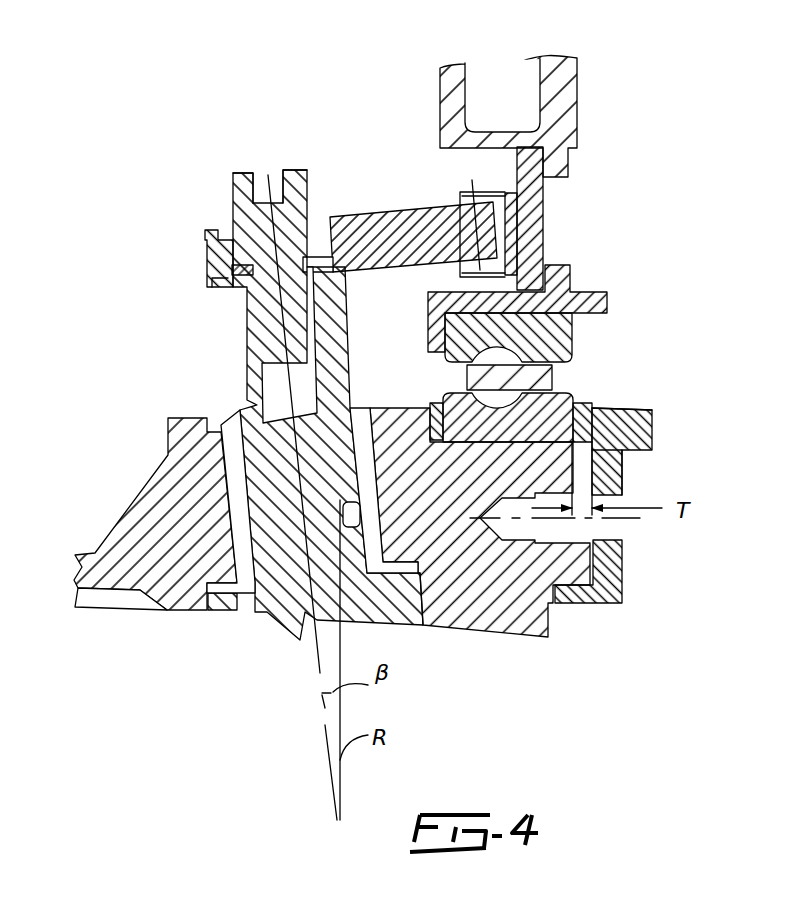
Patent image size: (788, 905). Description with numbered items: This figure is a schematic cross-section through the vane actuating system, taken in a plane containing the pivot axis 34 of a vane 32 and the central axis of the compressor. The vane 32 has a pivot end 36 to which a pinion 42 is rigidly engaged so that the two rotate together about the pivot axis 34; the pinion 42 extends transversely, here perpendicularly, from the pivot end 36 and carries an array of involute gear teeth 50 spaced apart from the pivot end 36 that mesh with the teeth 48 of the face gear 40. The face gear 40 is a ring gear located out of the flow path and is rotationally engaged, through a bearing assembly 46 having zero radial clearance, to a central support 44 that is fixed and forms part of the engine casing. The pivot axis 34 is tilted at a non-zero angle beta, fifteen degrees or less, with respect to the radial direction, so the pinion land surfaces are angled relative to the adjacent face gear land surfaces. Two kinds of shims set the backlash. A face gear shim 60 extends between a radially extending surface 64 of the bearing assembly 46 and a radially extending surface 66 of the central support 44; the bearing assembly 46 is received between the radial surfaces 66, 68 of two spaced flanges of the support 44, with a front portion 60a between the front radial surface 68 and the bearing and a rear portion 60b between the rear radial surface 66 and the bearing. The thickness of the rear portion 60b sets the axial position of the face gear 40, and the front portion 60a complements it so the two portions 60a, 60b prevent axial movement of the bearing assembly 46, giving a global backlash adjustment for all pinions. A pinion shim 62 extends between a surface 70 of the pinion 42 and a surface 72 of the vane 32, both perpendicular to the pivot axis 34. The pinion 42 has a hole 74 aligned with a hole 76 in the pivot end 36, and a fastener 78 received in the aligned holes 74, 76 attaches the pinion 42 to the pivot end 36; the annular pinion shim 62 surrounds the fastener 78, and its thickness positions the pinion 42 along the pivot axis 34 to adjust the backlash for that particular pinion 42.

The vane 32 is at (273, 613).
The pivot axis 34 is at (325, 725).
The pivot end 36 is at (257, 392).
The face gear 40 is at (562, 220).
The pinion 42 is at (362, 212).
The central support 44 is at (443, 425).
The bearing assembly 46 is at (585, 308).
The teeth of the face gear 48 is at (468, 197).
The involute gear teeth 50 is at (462, 206).
The face gear shim 60 is at (592, 398).
The front portion of the face gear shim 60a is at (433, 410).
The rear portion of the face gear shim 60b is at (652, 425).
The pinion shim 62 is at (240, 255).
The radially extending surface of the bearing assembly 64 is at (583, 403).
The rear radial surface of the central support 66 is at (594, 408).
The front radial surface of the central support 68 is at (593, 468).
The surface of the pinion 70 is at (232, 268).
The surface of the vane 72 is at (232, 284).
The hole of the pinion 74 is at (278, 267).
The hole of the pivot end 76 is at (217, 447).
The fastener 78 is at (243, 178).